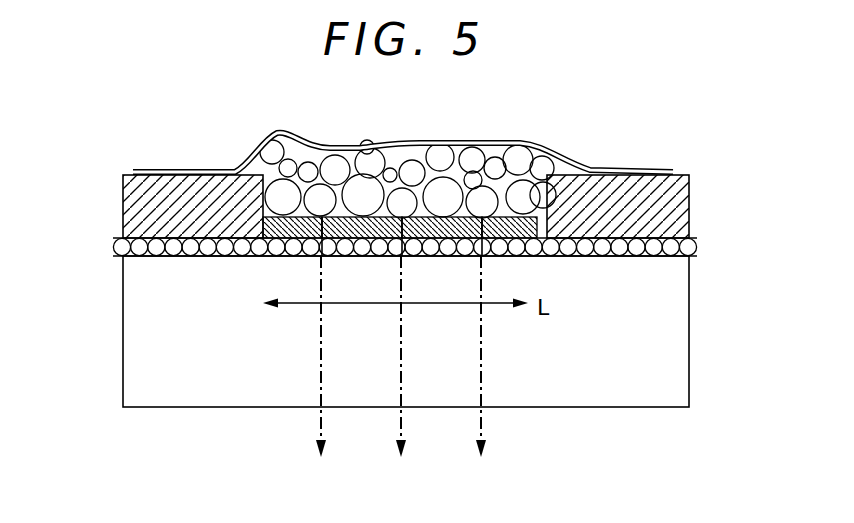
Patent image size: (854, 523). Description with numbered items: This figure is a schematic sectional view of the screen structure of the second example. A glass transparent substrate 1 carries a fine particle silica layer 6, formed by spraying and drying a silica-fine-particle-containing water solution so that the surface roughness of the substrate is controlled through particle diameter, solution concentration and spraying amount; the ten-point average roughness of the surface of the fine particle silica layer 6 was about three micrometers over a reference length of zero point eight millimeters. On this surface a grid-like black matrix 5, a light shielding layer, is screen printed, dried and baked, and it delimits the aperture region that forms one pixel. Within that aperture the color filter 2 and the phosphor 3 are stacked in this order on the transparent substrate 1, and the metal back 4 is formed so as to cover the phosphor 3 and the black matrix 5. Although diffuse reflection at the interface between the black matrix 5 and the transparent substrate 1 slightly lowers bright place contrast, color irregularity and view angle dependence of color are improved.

The transparent substrate 1 is at (140, 330).
The color filter 2 is at (520, 230).
The phosphor 3 is at (293, 196).
The metal back 4 is at (461, 142).
The black matrix 5 is at (140, 200).
The fine particle silica layer 6 is at (672, 247).